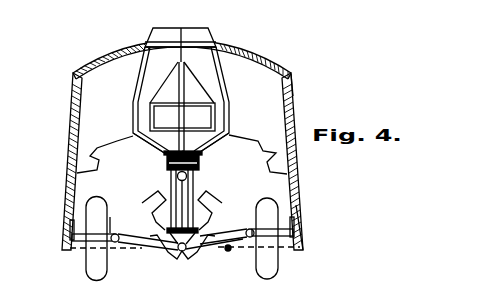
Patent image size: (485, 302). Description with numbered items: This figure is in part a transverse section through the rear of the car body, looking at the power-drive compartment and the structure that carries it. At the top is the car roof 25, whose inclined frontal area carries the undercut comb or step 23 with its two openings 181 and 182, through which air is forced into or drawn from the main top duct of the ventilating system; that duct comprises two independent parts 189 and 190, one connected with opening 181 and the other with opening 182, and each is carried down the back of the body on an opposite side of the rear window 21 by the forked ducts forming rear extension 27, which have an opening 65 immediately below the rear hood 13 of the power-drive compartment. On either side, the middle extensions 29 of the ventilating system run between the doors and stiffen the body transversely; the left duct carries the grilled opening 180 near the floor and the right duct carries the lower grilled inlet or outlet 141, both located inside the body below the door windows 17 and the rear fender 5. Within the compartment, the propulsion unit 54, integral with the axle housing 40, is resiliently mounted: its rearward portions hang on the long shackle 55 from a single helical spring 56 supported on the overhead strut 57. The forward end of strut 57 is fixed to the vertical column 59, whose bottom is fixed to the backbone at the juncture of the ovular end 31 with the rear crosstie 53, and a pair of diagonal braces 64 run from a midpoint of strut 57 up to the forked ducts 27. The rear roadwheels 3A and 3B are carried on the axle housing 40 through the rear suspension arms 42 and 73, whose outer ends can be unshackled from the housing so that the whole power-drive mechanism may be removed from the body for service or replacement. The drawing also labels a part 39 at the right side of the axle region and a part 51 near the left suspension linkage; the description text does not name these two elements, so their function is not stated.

The rear fender 5 is at (303, 224).
The rear hood 13 is at (125, 134).
The window 17 is at (292, 85).
The rear window 21 is at (208, 121).
The undercut comb or step 23 is at (160, 27).
The car roof 25 is at (259, 51).
The rear extension 27 is at (145, 86).
The middle extension 29 is at (95, 56).
The ovular end 31 is at (177, 258).
The axle 39 is at (283, 238).
The axle housing 40 is at (226, 232).
The rear suspension arm 42 is at (228, 252).
The link 51 is at (150, 253).
The rear crosstie 53 is at (78, 250).
The propulsion unit 54 is at (156, 193).
The long shackle 55 is at (187, 177).
The single helical spring 56 is at (196, 149).
The overhead strut 57 is at (177, 176).
The vertical column 59 is at (173, 153).
The diagonal braces 64 is at (151, 151).
The opening 65 is at (258, 146).
The rear suspension arm 73 is at (118, 252).
The lower grilled inlet or outlet 141 is at (303, 234).
The grilled opening 180 is at (68, 232).
The opening 181 is at (162, 33).
The opening 182 is at (203, 35).
The part of ventilating duct 189 is at (202, 46).
The part of ventilating duct 190 is at (172, 48).
The rear roadwheel 3A is at (268, 203).
The rear roadwheel 3B is at (109, 239).